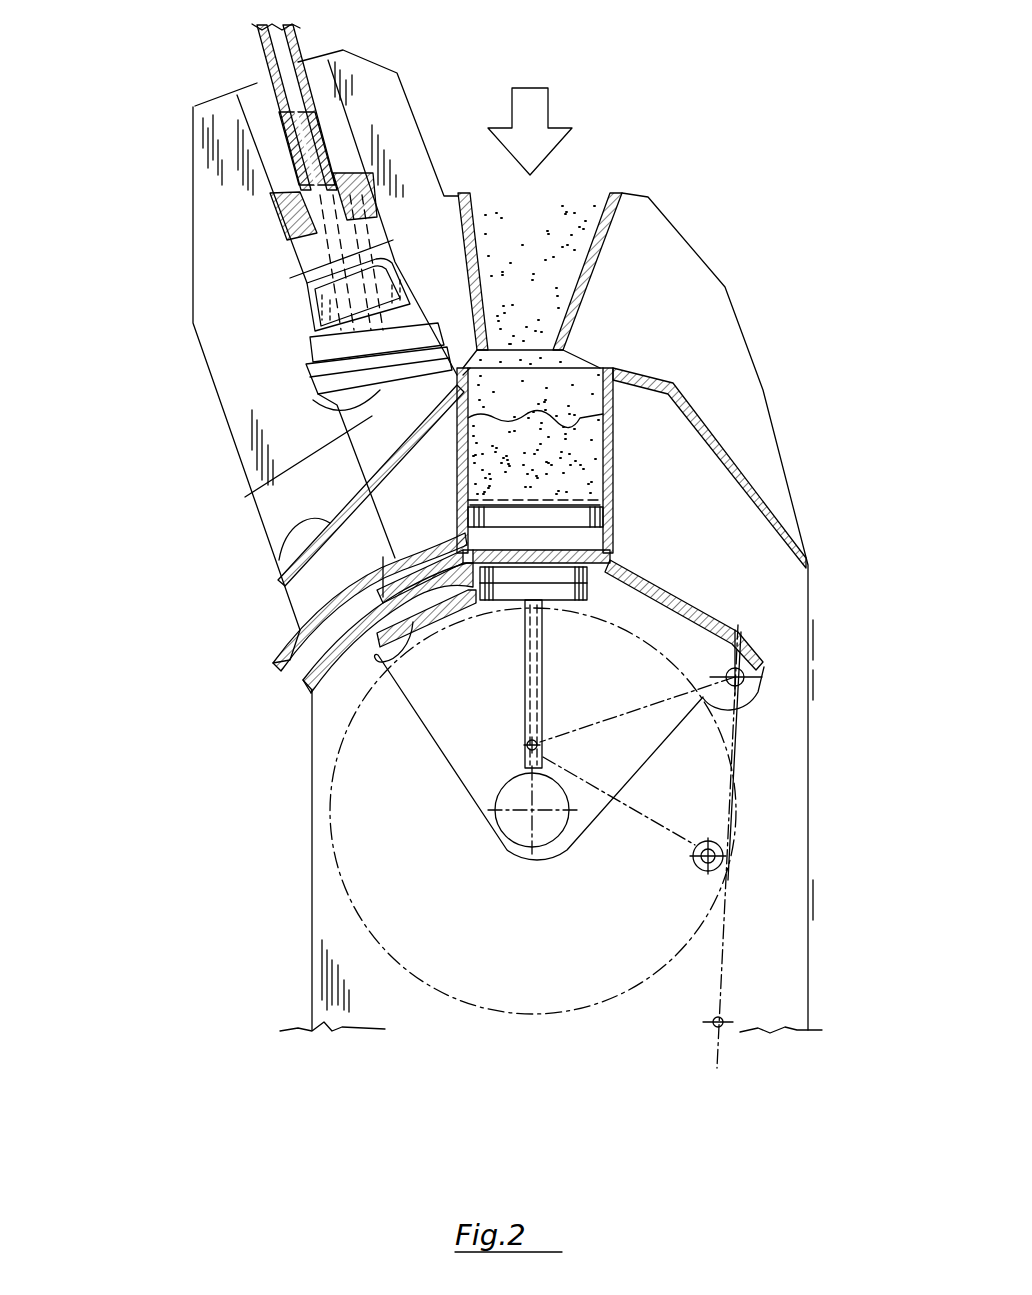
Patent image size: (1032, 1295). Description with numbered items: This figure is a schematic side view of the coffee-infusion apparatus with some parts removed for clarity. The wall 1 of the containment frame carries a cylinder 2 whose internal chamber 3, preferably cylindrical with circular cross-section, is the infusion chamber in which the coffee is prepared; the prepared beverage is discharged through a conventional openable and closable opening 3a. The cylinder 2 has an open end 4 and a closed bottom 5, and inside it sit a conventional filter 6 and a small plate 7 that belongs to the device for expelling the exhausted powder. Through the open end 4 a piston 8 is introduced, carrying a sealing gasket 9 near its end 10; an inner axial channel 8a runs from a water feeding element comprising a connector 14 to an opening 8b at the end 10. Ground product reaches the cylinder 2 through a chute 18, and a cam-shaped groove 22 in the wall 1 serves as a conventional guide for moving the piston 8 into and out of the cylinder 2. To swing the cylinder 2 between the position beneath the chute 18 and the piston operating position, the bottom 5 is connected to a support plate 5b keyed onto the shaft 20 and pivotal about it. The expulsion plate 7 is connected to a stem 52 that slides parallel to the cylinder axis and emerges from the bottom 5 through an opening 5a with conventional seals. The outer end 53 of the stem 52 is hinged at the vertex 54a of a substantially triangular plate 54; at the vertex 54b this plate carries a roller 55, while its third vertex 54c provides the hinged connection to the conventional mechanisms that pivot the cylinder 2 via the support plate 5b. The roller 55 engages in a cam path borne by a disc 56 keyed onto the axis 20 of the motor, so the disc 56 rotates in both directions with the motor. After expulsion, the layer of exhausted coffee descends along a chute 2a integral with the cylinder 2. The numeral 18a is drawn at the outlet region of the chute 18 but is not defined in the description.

The wall of the containment frame 1 is at (195, 140).
The cylinder 2 is at (613, 450).
The chute 2a is at (280, 550).
The infusion chamber 3 is at (575, 398).
The opening 3a is at (445, 543).
The open end 4 is at (577, 361).
The closed bottom 5 is at (610, 553).
The opening 5a is at (547, 603).
The support plate 5b is at (673, 607).
The filter 6 is at (573, 500).
The small plate 7 is at (613, 527).
The piston 8 is at (273, 222).
The inner axial channel 8a is at (363, 167).
The opening 8b is at (262, 486).
The sealing gasket 9 is at (313, 378).
The end 10 is at (318, 394).
The connector 14 is at (325, 135).
The chute 18 is at (598, 214).
The hopper outlet 18a is at (462, 357).
The shaft 20 is at (500, 850).
The groove 22 is at (258, 78).
The stem 52 is at (523, 633).
The end 53 is at (523, 760).
The triangular plate 54 is at (690, 763).
The vertex 54a is at (553, 730).
The vertex 54b is at (660, 828).
The third vertex 54c is at (712, 686).
The roller 55 is at (725, 858).
The disc 56 is at (608, 938).